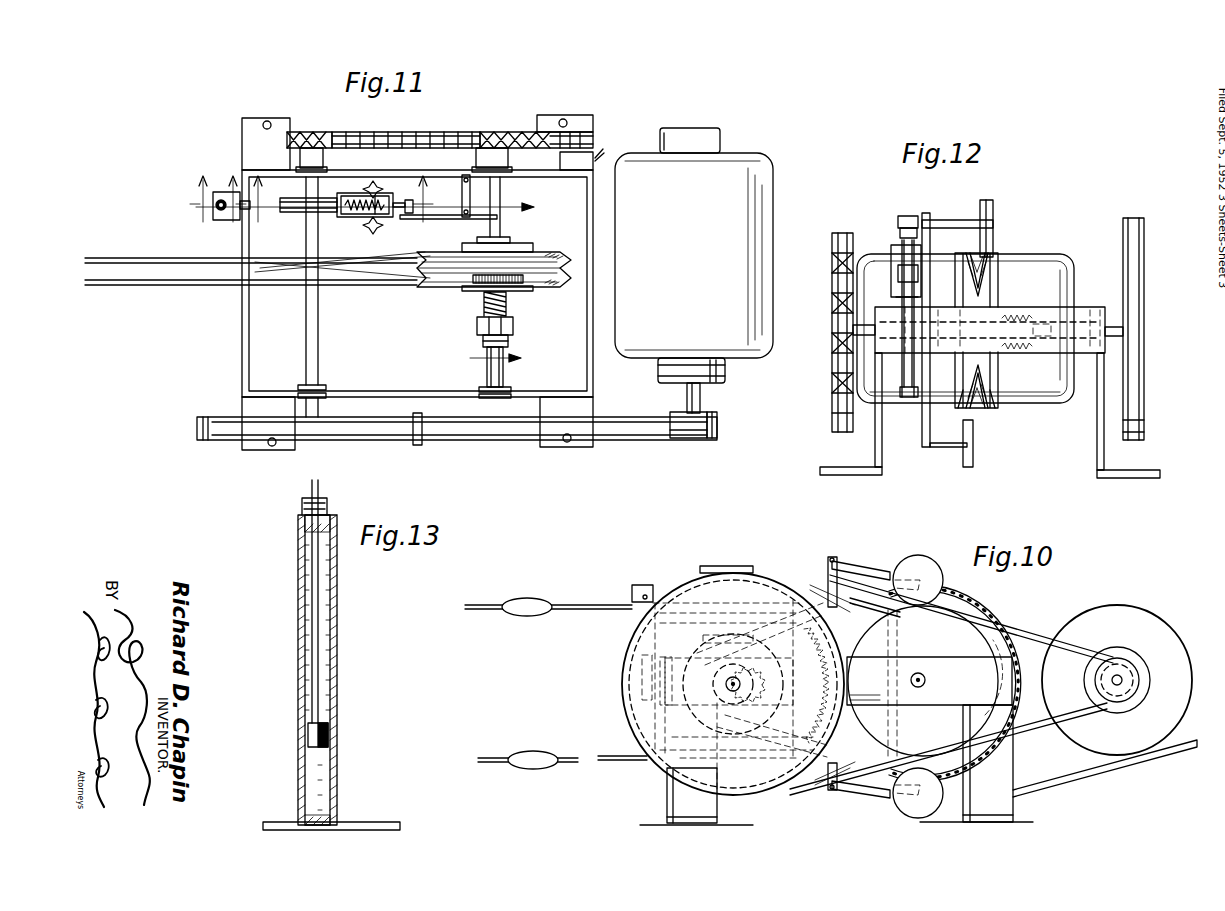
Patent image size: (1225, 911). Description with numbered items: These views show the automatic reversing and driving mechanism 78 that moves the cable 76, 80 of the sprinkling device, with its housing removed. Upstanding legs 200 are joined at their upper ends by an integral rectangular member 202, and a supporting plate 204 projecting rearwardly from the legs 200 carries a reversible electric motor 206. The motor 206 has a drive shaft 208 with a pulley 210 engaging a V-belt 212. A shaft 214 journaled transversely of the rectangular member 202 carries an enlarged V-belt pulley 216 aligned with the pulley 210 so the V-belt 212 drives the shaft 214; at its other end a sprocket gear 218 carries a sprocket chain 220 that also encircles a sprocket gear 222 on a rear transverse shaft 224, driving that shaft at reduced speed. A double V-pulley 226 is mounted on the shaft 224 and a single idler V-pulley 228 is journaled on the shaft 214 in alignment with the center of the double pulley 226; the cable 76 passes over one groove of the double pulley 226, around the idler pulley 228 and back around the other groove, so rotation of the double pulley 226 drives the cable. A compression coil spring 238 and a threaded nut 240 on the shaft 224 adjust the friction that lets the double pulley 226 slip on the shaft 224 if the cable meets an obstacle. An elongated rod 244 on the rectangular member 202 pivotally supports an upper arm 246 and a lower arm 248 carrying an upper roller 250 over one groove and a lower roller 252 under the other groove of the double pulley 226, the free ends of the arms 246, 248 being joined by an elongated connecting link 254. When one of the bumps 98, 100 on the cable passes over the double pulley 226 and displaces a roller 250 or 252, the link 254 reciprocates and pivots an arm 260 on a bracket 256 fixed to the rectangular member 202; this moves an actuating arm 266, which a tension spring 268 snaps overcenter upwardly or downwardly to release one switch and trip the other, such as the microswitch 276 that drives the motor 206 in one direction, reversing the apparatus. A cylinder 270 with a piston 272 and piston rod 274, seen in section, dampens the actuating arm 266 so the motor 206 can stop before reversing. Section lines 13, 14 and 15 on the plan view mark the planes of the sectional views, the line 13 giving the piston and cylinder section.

In FIG. 11, the section line 13— 13 is at (216, 215).
In FIG. 11, the section line 14- 14 is at (343, 215).
In FIG. 11, the section line 15- 15 is at (379, 278).
In FIG. 11, the cable 76 is at (127, 258).
In FIG. 10, the cable 76 is at (495, 760).
In FIG. 11, the automatic reversing and driving mechanism 78 is at (222, 360).
In FIG. 11, the cable 80 is at (106, 285).
In FIG. 10, the cable 80 is at (565, 604).
In FIG. 10, the bump 98 is at (534, 751).
In FIG. 10, the bump 100 is at (537, 599).
In FIG. 11, the upstanding legs 200 is at (590, 447).
In FIG. 12, the upstanding legs 200 is at (1100, 442).
In FIG. 10, the upstanding legs 200 is at (667, 807).
In FIG. 11, the rectangular member 202 is at (594, 158).
In FIG. 12, the rectangular member 202 is at (1083, 310).
In FIG. 10, the rectangular member 202 is at (929, 683).
In FIG. 10, the supporting plate 204 is at (1170, 755).
In FIG. 11, the reversible electric motor 206 is at (766, 176).
In FIG. 12, the reversible electric motor 206 is at (1046, 257).
In FIG. 10, the reversible electric motor 206 is at (1130, 612).
In FIG. 11, the drive shaft 208 is at (700, 400).
In FIG. 11, the pulley 210 is at (713, 438).
In FIG. 10, the pulley 210 is at (1130, 668).
In FIG. 11, the V-belt 212 is at (521, 440).
In FIG. 10, the V-belt 212 is at (1022, 640).
In FIG. 11, the shaft 214 is at (319, 377).
In FIG. 11, the enlarged V-belt pulley 216 is at (417, 445).
In FIG. 10, the enlarged V-belt pulley 216 is at (668, 772).
In FIG. 11, the sprocket gear 218 is at (316, 140).
In FIG. 11, the sprocket chain 220 is at (392, 134).
In FIG. 11, the sprocket gear 222 is at (495, 132).
In FIG. 12, the sprocket gear 222 is at (842, 332).
In FIG. 10, the sprocket gear 222 is at (982, 618).
In FIG. 11, the rear transverse shaft 224 is at (504, 382).
In FIG. 11, the double V-pulley 226 is at (542, 252).
In FIG. 12, the double V-pulley 226 is at (983, 268).
In FIG. 11, the single idler V-pulley 228 is at (355, 268).
In FIG. 11, the compression coil spring 238 is at (483, 305).
In FIG. 11, the threaded nut 240 is at (511, 326).
In FIG. 10, the elongated rod 244 is at (905, 612).
In FIG. 11, the upper arm 246 is at (444, 215).
In FIG. 10, the upper arm 246 is at (856, 563).
In FIG. 10, the lower arm 248 is at (860, 792).
In FIG. 12, the upper roller 250 is at (988, 200).
In FIG. 10, the upper roller 250 is at (917, 556).
In FIG. 12, the lower roller 252 is at (973, 465).
In FIG. 10, the lower roller 252 is at (928, 808).
In FIG. 10, the connecting link 254 is at (830, 573).
In FIG. 13, the bracket 256 is at (370, 822).
In FIG. 11, the arm 260 is at (386, 195).
In FIG. 11, the actuating arm 266 is at (356, 218).
In FIG. 10, the actuating arm 266 is at (640, 585).
In FIG. 11, the tension spring 268 is at (359, 195).
In FIG. 12, the cylinder 270 is at (911, 397).
In FIG. 13, the piston 272 is at (330, 735).
In FIG. 13, the piston rod 274 is at (318, 584).
In FIG. 12, the microswitch 276 is at (908, 216).
In FIG. 10, the microswitch 276 is at (708, 566).